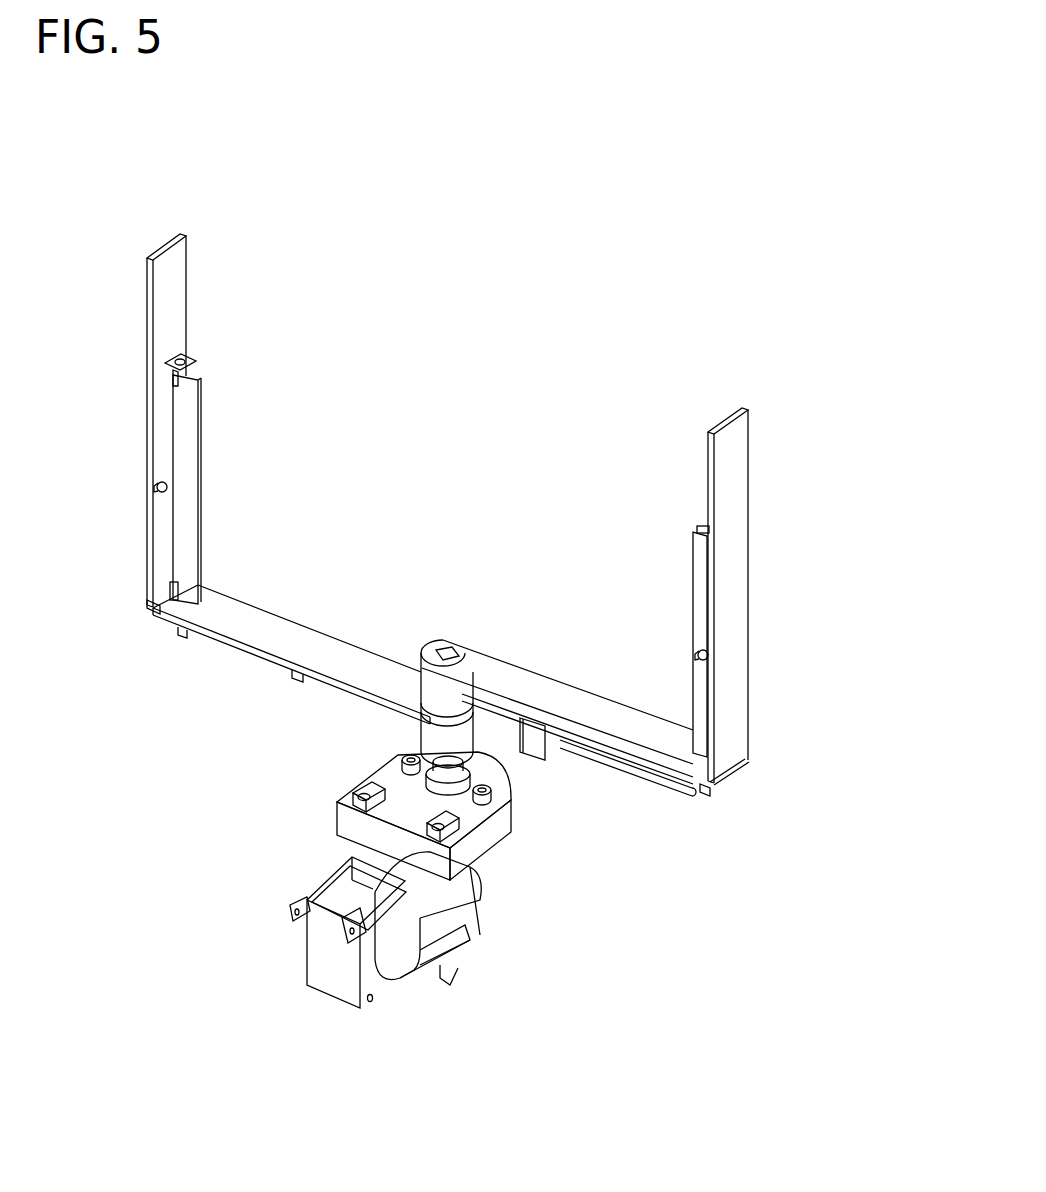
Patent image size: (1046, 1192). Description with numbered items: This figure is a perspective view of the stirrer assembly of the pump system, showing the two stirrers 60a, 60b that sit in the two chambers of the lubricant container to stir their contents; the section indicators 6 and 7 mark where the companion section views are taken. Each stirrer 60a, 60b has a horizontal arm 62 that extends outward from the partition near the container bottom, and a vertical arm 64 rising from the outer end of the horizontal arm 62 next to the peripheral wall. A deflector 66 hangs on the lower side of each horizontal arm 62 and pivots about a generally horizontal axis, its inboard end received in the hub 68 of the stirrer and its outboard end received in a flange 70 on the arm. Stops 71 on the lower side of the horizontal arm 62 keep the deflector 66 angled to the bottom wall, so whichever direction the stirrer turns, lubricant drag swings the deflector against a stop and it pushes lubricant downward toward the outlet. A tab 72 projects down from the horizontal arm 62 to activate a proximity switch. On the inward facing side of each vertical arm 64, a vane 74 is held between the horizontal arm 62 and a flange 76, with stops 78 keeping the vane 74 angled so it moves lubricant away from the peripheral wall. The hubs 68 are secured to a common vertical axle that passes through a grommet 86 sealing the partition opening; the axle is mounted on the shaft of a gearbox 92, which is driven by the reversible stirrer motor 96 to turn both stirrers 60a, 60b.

The section line 6- 6 is at (67, 440).
The section line 7- 7 is at (822, 452).
The stirrer 60a is at (198, 248).
The stirrer 60b is at (760, 427).
The horizontal arm 62 is at (345, 640).
The vertical arm 64 is at (147, 590).
The deflector 66 is at (630, 776).
The hub 68 is at (423, 650).
The flange 70 is at (182, 636).
The stops 71 is at (298, 678).
The tab 72 is at (545, 765).
The vane 74 is at (202, 402).
The flange 76 is at (190, 362).
The stops 78 is at (160, 498).
The grommet 86 is at (478, 760).
The gearbox 92 is at (495, 845).
The stirrer motor 96 is at (472, 905).